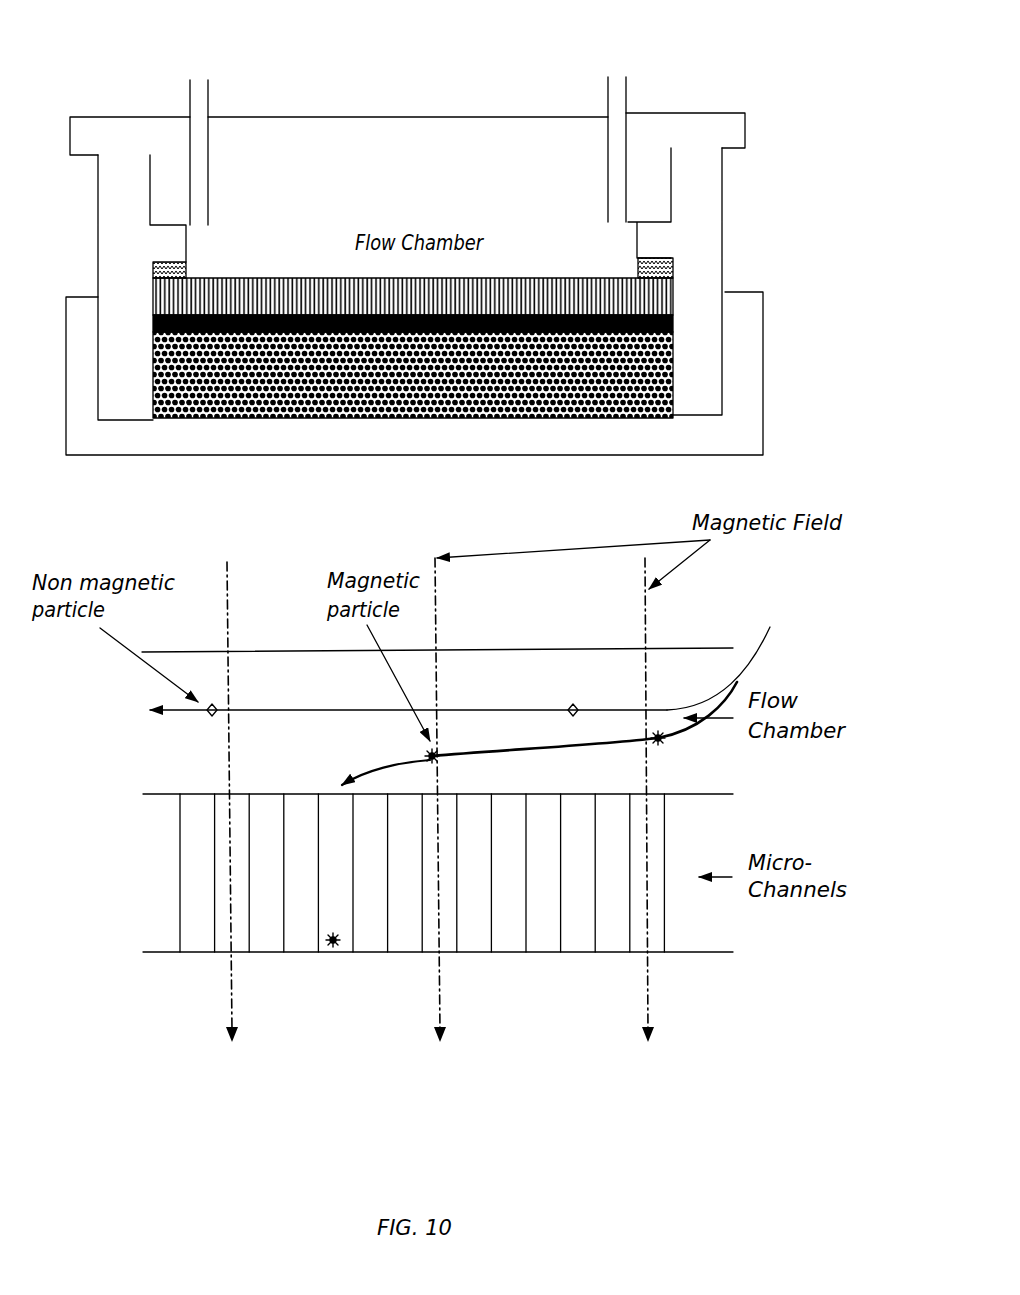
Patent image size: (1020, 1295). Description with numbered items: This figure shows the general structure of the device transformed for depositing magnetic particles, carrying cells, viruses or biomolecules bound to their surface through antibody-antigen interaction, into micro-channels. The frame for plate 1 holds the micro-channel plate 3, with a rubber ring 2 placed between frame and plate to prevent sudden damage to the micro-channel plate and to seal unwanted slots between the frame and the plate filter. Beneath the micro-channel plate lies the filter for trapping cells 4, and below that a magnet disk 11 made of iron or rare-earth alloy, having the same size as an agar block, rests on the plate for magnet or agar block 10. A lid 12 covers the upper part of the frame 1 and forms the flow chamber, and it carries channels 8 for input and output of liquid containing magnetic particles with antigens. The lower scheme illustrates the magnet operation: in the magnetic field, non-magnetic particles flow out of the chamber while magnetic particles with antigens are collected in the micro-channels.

The frame for plate 1 is at (710, 166).
The rubber ring 2 is at (680, 256).
The micro-channel plate 3 is at (677, 292).
The filter for trapping cells 4 is at (677, 328).
The channels for input and output of liquid 8 is at (210, 134).
The plate for magnet or agar block 10 is at (715, 430).
The magnet disk 11 is at (600, 382).
The lid 12 is at (659, 127).